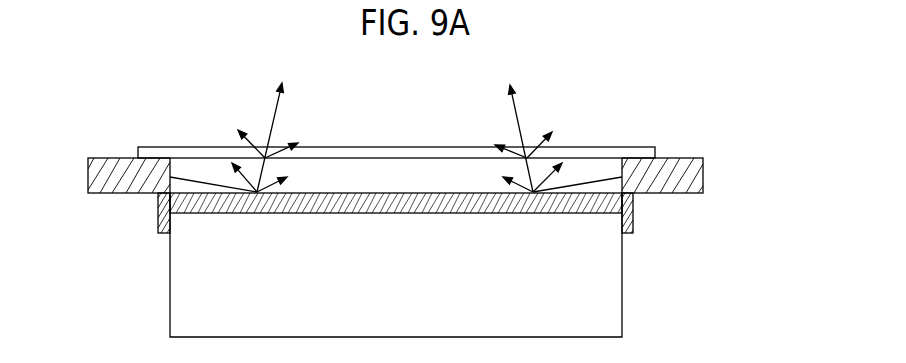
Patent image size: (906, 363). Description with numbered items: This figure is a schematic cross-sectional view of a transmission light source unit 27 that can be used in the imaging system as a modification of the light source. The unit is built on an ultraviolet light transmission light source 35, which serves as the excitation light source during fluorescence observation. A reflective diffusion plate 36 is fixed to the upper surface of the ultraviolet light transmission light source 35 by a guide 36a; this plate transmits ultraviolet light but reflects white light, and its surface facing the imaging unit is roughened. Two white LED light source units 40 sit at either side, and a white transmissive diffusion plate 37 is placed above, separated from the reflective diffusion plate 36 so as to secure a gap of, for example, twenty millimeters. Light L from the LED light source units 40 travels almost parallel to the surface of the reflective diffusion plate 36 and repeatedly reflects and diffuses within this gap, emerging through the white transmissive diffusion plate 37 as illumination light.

The transmission light source unit 27 is at (417, 210).
The white transmissive diffusion plate 37 is at (450, 155).
The white LED light source unit 40 is at (90, 174).
The reflective diffusion plate 36 is at (509, 208).
The guide 36a is at (158, 215).
The ultraviolet light transmission light source 35 is at (615, 293).
The light L is at (188, 180).